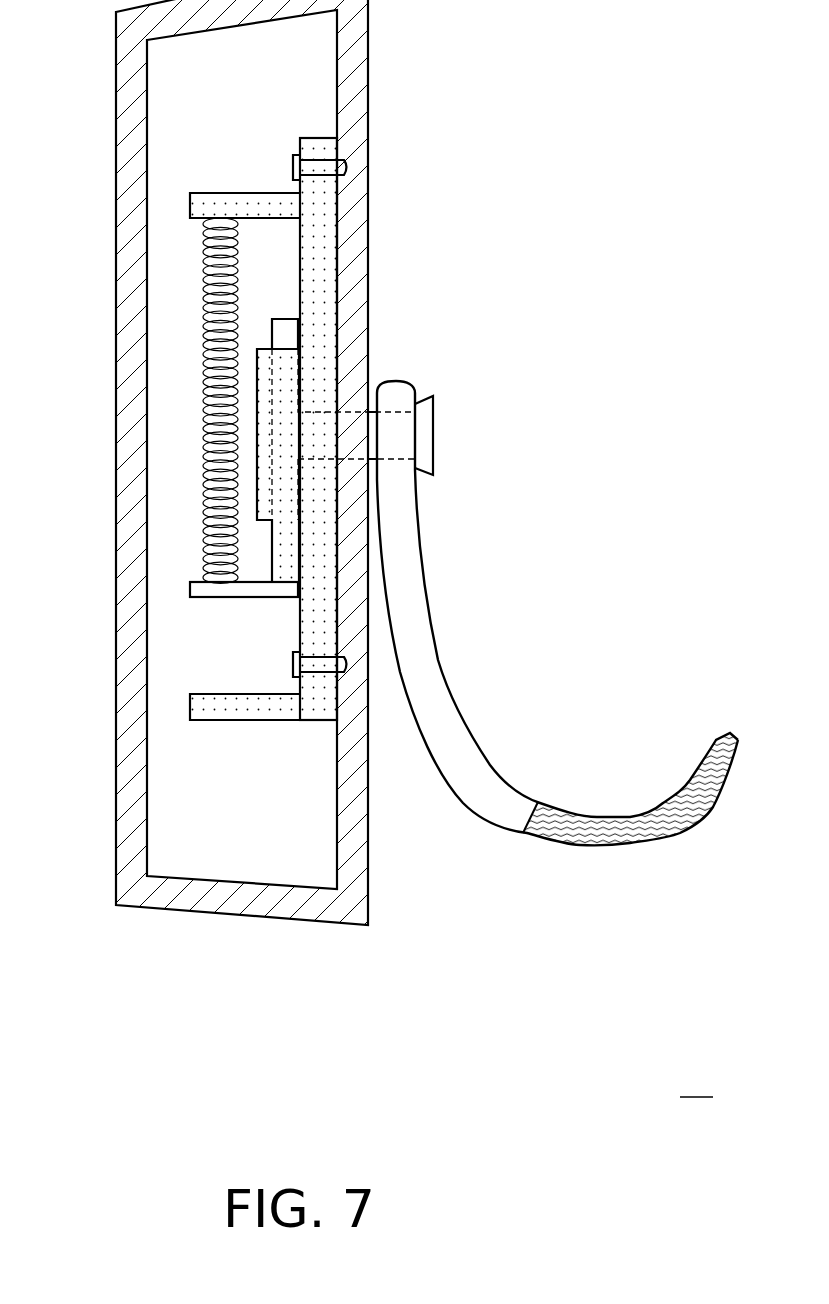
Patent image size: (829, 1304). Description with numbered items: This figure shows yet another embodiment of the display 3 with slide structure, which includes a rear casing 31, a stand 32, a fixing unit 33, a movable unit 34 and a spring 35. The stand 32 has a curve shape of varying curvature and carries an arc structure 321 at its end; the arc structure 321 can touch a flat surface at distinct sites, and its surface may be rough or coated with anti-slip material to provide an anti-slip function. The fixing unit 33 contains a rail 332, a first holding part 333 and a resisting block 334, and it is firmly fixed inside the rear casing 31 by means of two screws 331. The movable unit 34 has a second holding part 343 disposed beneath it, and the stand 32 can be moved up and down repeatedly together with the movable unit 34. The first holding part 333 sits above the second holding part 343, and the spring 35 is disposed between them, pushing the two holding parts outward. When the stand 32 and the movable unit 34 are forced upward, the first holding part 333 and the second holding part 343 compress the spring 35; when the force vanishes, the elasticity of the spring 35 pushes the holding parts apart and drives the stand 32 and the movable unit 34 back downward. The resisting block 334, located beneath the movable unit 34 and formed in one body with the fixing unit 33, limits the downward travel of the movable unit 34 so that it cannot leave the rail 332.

The display with slide structure 3 is at (696, 1080).
The rear casing 31 is at (355, 39).
The stand 32 is at (492, 792).
The arc structure 321 is at (640, 828).
The fixing unit 33 is at (560, 115).
The screw 331 is at (323, 168).
The rail 332 is at (262, 347).
The first holding part 333 is at (238, 200).
The resisting block 334 is at (227, 707).
The movable unit 34 is at (290, 433).
The second holding part 343 is at (260, 588).
The spring 35 is at (203, 274).